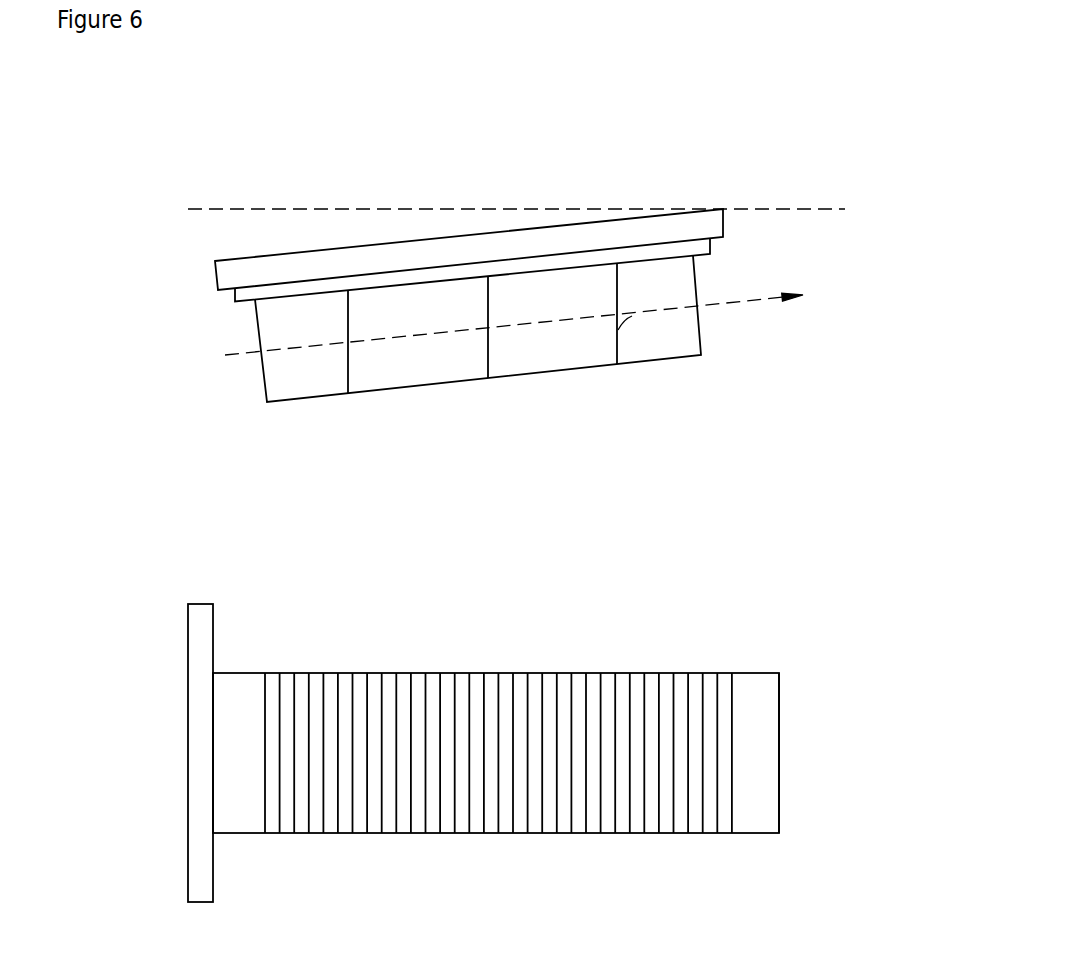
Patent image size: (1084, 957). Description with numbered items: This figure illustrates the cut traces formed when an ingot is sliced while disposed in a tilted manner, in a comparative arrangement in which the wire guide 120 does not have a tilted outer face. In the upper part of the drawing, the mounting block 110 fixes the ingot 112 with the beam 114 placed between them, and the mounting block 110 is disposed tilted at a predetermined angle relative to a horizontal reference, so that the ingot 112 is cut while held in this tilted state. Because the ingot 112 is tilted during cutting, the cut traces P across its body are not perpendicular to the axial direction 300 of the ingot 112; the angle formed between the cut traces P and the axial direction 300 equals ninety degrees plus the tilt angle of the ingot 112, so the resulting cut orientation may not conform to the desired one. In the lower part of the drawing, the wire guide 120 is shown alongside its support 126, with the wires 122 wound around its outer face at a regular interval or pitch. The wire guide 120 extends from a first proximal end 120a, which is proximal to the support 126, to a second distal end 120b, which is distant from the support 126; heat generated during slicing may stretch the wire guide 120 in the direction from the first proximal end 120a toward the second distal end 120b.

The mounting block 110 is at (673, 227).
The ingot 112 is at (685, 287).
The beam 114 is at (235, 298).
The axial direction 300 is at (746, 302).
The cut traces P is at (488, 357).
The wire guide 120 is at (838, 664).
The first proximal end 120a is at (245, 684).
The second distal end 120b is at (753, 684).
The wires 122 is at (732, 803).
The support 126 is at (198, 762).